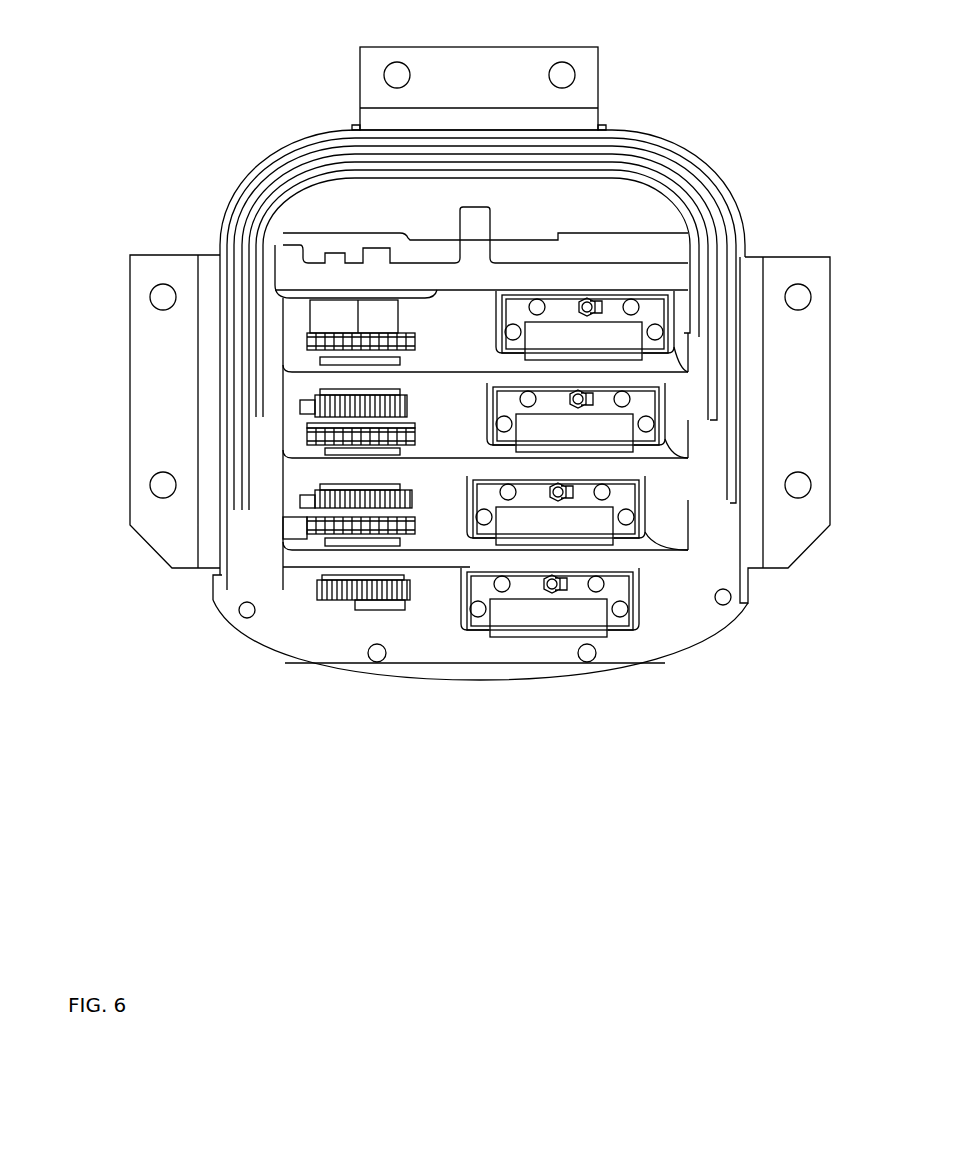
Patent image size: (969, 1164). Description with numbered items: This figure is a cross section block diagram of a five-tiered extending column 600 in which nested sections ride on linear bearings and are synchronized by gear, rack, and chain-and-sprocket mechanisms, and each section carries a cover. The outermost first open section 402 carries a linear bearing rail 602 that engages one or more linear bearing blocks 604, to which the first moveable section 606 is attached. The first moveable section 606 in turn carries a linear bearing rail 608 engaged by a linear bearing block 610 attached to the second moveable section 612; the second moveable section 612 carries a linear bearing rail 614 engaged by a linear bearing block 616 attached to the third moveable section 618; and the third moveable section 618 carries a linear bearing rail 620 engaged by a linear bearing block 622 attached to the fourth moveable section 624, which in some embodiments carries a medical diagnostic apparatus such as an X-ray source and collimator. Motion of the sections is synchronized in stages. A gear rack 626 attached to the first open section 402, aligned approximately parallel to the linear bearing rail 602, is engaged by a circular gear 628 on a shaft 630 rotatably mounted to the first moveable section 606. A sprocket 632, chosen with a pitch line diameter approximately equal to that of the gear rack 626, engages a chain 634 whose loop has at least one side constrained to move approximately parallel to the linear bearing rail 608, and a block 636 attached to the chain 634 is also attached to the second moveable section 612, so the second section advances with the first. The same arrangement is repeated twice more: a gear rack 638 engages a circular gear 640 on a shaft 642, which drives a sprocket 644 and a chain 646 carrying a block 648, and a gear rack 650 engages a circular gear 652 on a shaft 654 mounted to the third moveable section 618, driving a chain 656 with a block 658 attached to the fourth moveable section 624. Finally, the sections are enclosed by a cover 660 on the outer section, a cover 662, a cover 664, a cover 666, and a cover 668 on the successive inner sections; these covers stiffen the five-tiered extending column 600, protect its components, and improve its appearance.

The five-tiered extending column 600 is at (779, 960).
The first open section 402 is at (687, 627).
The linear bearing rail 602 is at (580, 627).
The linear bearing blocks 604 is at (592, 596).
The first moveable section 606 is at (700, 523).
The linear bearing rail 608 is at (580, 535).
The linear bearing block 610 is at (622, 495).
The second moveable section 612 is at (690, 432).
The linear bearing rail 614 is at (590, 443).
The linear bearing block 616 is at (630, 408).
The third moveable section 618 is at (687, 345).
The linear bearing rail 620 is at (593, 352).
The linear bearing block 622 is at (637, 320).
The fourth moveable section 624 is at (630, 270).
The gear rack 626 is at (300, 585).
The circular gear 628 is at (340, 596).
The shaft 630 is at (310, 577).
The sprocket 632 is at (295, 535).
The chain 634 is at (320, 540).
The block 636 is at (313, 523).
The gear rack 638 is at (300, 503).
The circular gear 640 is at (313, 497).
The shaft 642 is at (313, 488).
The sprocket 644 is at (320, 450).
The chain 646 is at (313, 432).
The block 648 is at (313, 424).
The gear rack 650 is at (300, 414).
The circular gear 652 is at (307, 412).
The shaft 654 is at (313, 406).
The chain 656 is at (335, 338).
The block 658 is at (370, 316).
The cover 660 is at (220, 220).
The cover 662 is at (250, 197).
The cover 664 is at (290, 177).
The cover 666 is at (340, 167).
The cover 668 is at (362, 178).